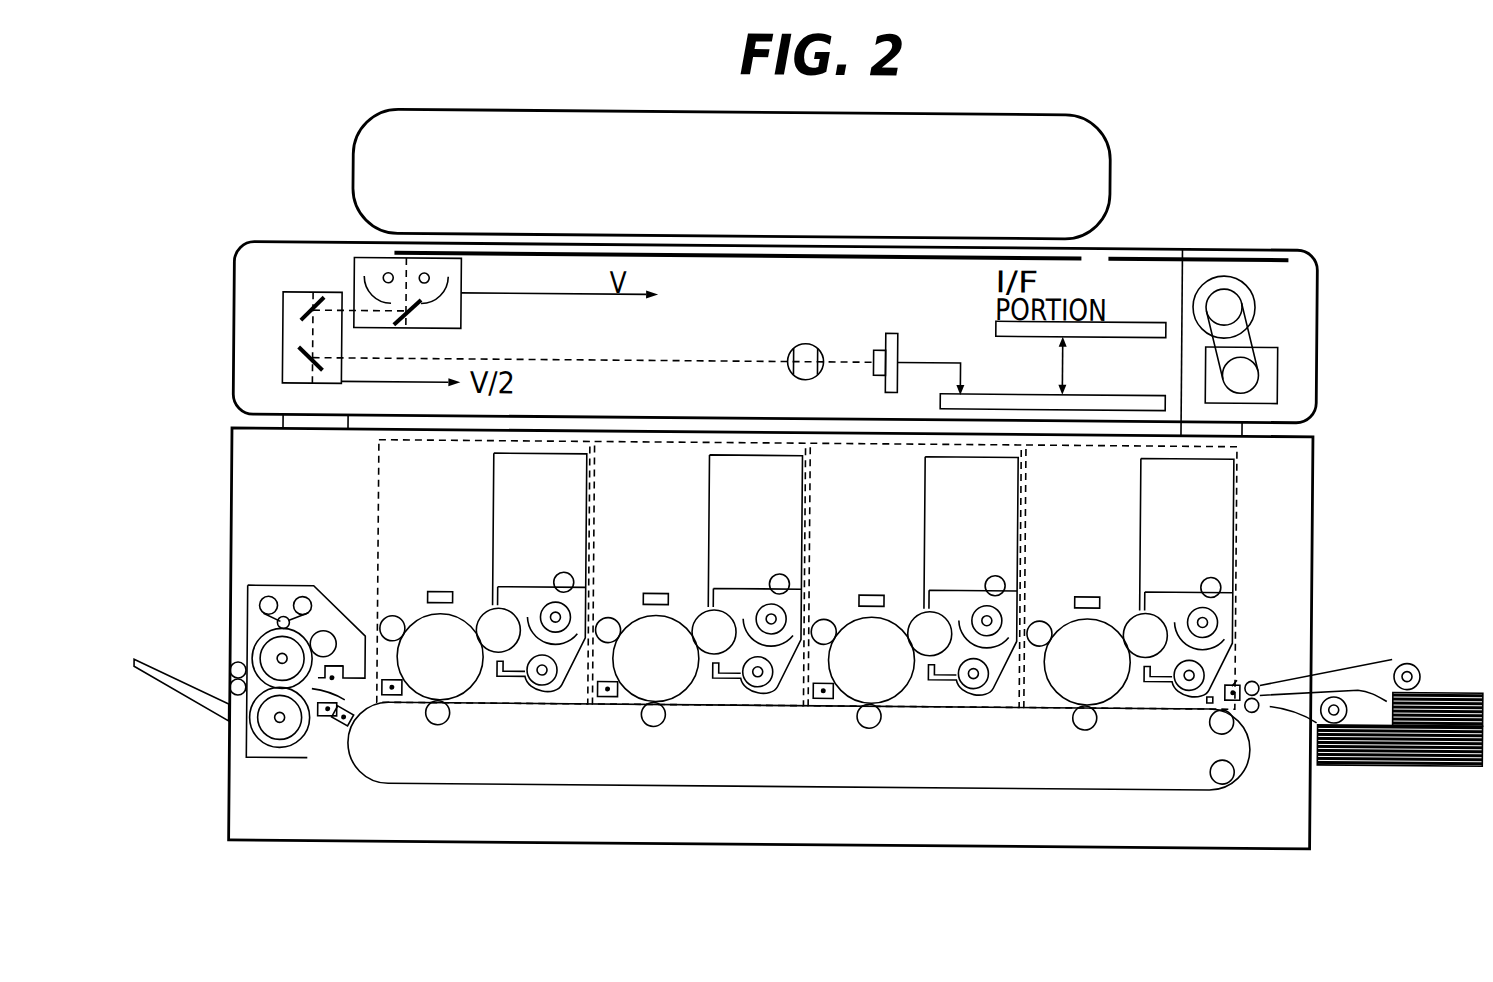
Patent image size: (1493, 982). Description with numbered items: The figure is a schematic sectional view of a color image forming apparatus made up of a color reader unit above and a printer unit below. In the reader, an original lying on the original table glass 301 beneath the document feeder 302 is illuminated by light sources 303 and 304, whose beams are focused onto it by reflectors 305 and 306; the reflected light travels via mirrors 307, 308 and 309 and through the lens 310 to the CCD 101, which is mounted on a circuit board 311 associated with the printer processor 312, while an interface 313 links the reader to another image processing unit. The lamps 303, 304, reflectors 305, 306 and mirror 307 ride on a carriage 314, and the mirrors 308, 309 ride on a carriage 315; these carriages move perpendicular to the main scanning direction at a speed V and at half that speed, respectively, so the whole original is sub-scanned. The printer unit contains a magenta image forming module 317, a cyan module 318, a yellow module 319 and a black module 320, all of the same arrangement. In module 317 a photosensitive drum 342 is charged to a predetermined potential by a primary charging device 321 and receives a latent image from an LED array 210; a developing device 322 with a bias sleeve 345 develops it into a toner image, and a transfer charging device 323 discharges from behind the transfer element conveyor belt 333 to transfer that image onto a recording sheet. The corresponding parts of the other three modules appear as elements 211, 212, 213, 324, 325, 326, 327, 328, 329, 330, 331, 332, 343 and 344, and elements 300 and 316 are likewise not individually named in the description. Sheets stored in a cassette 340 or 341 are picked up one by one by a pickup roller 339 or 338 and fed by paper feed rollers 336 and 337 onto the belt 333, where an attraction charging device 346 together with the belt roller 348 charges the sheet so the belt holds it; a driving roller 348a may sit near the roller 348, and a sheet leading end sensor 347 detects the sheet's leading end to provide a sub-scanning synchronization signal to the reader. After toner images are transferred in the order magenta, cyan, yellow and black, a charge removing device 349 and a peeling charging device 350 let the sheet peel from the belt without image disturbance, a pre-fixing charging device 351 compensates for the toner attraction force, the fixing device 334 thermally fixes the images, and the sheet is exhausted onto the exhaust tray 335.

The CCD 101 is at (876, 344).
The LED array 210 is at (1080, 560).
The toner sensor 211 is at (864, 557).
The toner sensor 212 is at (648, 556).
The toner sensor 213 is at (439, 588).
The image reading unit 300 is at (1214, 241).
The original table glass 301 is at (527, 248).
The document feeder 302 is at (1110, 140).
The light source 303 is at (423, 270).
The light source 304 is at (387, 270).
The reflector 305 is at (460, 285).
The reflector 306 is at (353, 282).
The mirror 307 is at (430, 324).
The mirror 308 is at (282, 300).
The mirror 309 is at (282, 367).
The lens 310 is at (805, 339).
The circuit board 311 is at (898, 333).
The printer processor 312 is at (1143, 388).
The interface 313 is at (1143, 315).
The carriage 314 is at (460, 306).
The carriage 315 is at (282, 338).
The drive unit 316 is at (1318, 292).
The magenta image forming module 317 is at (1238, 488).
The cyan image forming module 318 is at (816, 436).
The yellow image forming module 319 is at (750, 436).
The black image forming module 320 is at (563, 437).
The primary charging device 321 is at (1048, 601).
The developing device 322 is at (1144, 573).
The transfer charging device 323 is at (1089, 748).
The charging roller 324 is at (832, 598).
The toner hopper 325 is at (928, 569).
The transfer roller 326 is at (874, 744).
The charging roller 327 is at (616, 597).
The toner hopper 328 is at (713, 568).
The transfer roller 329 is at (658, 743).
The charging roller 330 is at (395, 613).
The toner hopper 331 is at (510, 496).
The transfer roller 332 is at (440, 723).
The transfer element conveyor belt 333 is at (557, 786).
The fixing device 334 is at (281, 585).
The exhaust tray 335 is at (180, 678).
The paper feed roller 336 is at (1290, 671).
The paper feed roller 337 is at (1259, 705).
The pickup roller 338 is at (1335, 714).
The pickup roller 339 is at (1410, 654).
The cassette 340 is at (1450, 756).
The cassette 341 is at (1458, 678).
The photosensitive drum 342 is at (1080, 694).
The photosensitive drum 343 is at (865, 690).
The photosensitive drum 344 is at (649, 689).
The sleeve 345 is at (424, 681).
The attraction charging device 346 is at (1128, 621).
The sheet leading end sensor 347 is at (1021, 608).
The transfer element conveyor belt roller 348 is at (487, 606).
The driving roller 348a is at (1215, 777).
The charge removing device 349 is at (385, 694).
The peeling charging device 350 is at (329, 729).
The pre-fixing charging device 351 is at (337, 655).